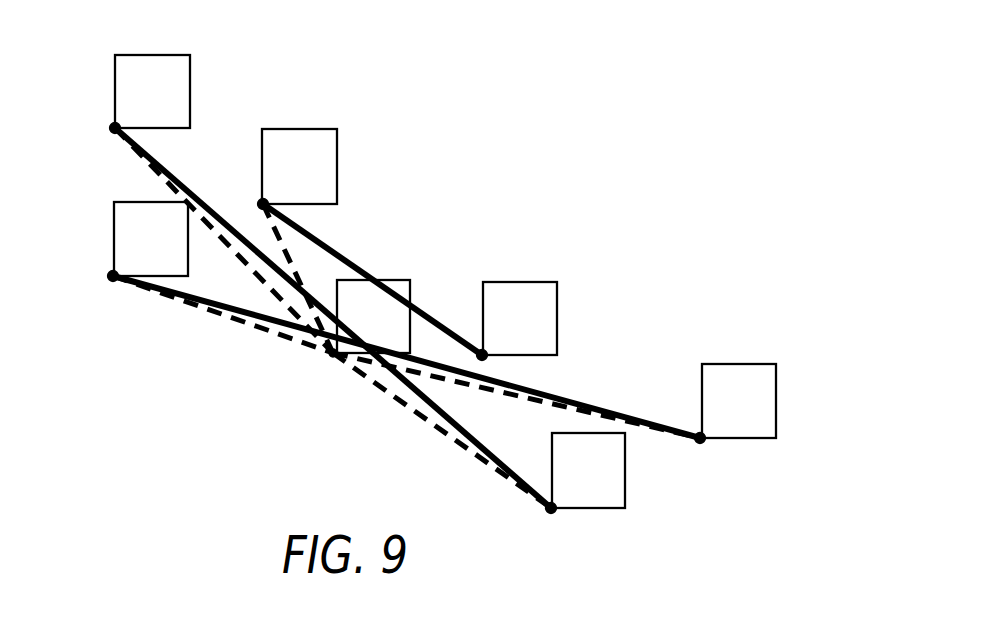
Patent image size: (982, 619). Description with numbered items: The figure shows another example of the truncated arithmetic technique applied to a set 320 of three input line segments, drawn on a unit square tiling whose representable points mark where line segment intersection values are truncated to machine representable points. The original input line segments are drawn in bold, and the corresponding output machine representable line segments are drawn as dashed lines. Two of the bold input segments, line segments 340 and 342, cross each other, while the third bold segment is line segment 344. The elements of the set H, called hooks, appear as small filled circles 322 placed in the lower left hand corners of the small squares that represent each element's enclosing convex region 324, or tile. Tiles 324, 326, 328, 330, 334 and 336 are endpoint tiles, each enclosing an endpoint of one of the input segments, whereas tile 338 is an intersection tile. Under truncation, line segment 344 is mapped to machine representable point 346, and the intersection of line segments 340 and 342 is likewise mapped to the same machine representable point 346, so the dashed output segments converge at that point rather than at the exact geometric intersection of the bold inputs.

The set of three input line segments 320 is at (548, 152).
The hooks 322 is at (700, 438).
The enclosing convex region (tile) 324 is at (737, 364).
The endpoint tile 326 is at (152, 55).
The endpoint tile 328 is at (298, 129).
The endpoint tile 330 is at (148, 202).
The endpoint tile 334 is at (520, 282).
The endpoint tile 336 is at (625, 467).
The intersection tile 338 is at (393, 280).
The line segment 340 is at (477, 437).
The line segment 342 is at (570, 397).
The line segment 344 is at (323, 238).
The machine representable point 346 is at (333, 355).